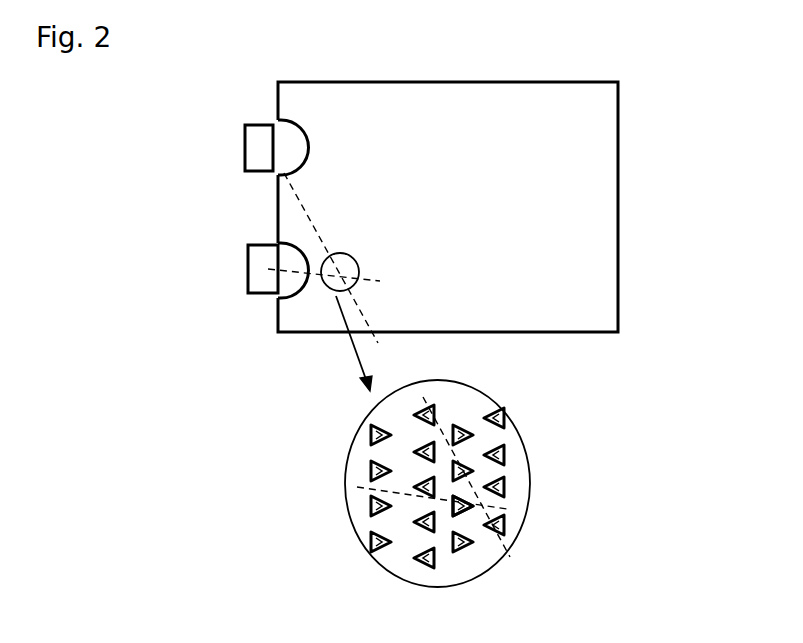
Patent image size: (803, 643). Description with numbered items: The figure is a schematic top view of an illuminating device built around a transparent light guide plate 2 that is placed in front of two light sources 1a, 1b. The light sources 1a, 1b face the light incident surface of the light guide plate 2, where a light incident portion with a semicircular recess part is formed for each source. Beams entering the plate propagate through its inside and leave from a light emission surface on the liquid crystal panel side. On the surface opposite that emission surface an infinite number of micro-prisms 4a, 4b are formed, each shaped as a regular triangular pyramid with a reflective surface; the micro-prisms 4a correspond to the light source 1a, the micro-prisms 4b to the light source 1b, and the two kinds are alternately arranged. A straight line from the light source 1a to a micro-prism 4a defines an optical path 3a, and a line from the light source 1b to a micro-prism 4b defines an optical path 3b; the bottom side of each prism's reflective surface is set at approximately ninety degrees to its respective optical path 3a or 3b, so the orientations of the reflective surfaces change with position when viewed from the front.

The light guide plate 2 is at (614, 203).
The light source 1a is at (245, 150).
The light source 1b is at (250, 267).
The optical path 3a is at (290, 198).
The optical path 3b is at (315, 275).
The micro-prism 4a is at (497, 523).
The micro-prism 4b is at (477, 508).